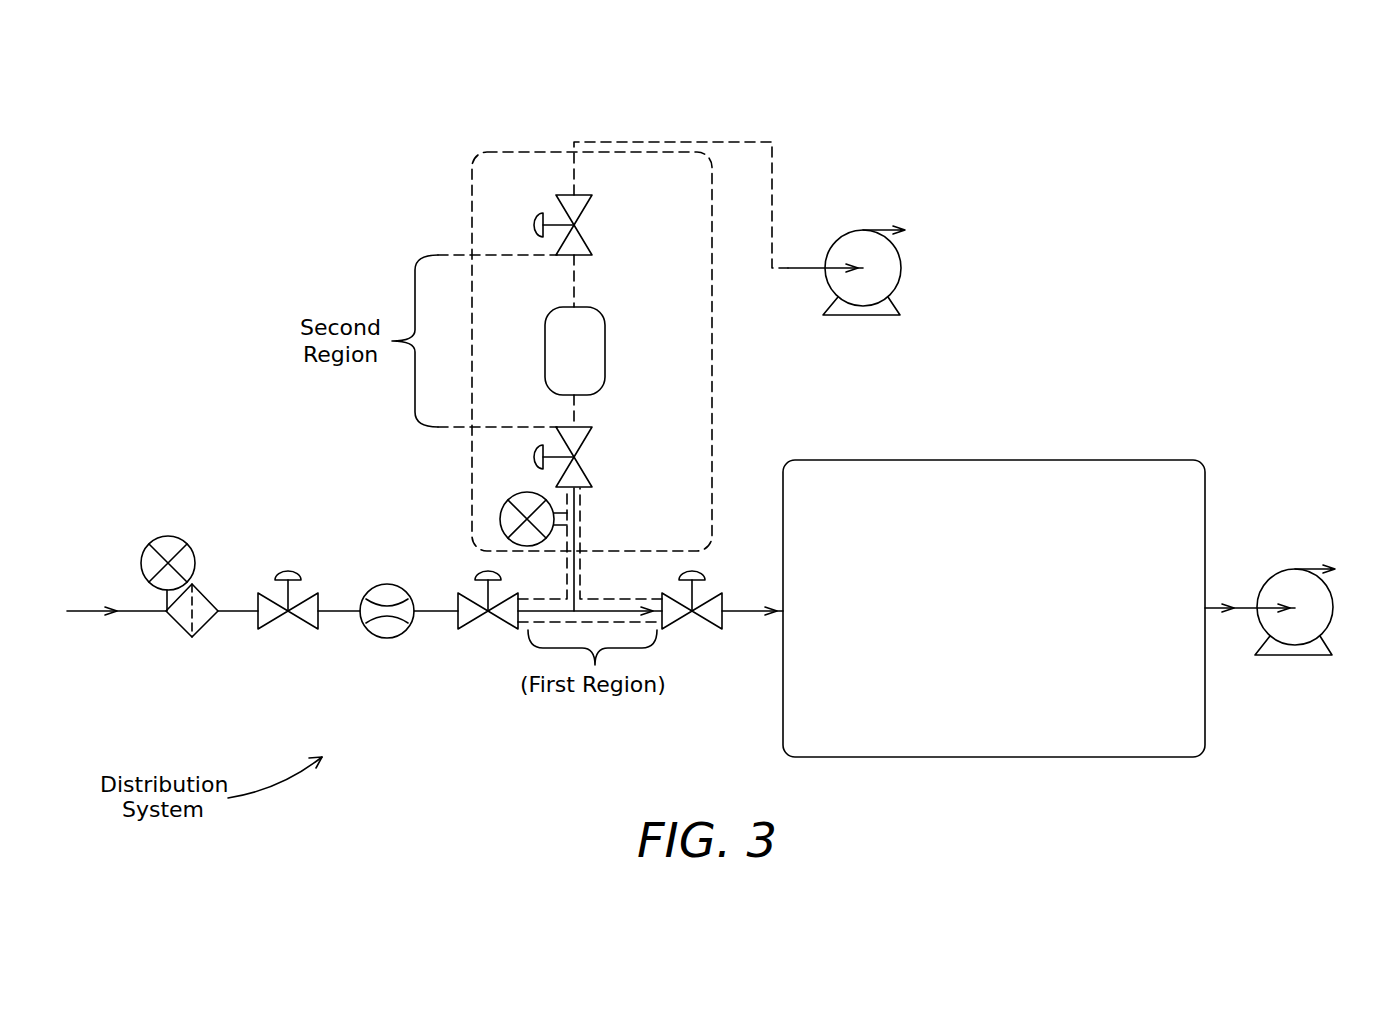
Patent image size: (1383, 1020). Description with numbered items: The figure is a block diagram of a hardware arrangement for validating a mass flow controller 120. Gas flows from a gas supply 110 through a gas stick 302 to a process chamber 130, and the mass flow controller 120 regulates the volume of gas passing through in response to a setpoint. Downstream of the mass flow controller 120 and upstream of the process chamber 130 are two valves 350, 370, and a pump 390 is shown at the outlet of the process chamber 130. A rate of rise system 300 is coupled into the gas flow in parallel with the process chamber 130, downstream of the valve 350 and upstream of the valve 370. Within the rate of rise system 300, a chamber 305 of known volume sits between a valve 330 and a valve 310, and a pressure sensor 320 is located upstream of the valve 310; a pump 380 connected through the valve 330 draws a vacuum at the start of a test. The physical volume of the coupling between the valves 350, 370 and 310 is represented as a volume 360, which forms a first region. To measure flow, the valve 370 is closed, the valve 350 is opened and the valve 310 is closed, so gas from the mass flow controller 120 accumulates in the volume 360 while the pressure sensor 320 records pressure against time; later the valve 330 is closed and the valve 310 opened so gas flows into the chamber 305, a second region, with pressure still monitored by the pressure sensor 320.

The gas supply 110 is at (148, 546).
The gas stick 302 is at (310, 628).
The mass flow controller 120 is at (372, 590).
The valve 350 is at (510, 628).
The valve 370 is at (672, 625).
The volume 360 is at (580, 533).
The rate of rise system 300 is at (471, 193).
The valve 330 is at (583, 237).
The chamber 305 is at (633, 332).
The valve 310 is at (583, 470).
The pressure sensor 320 is at (500, 518).
The pump 380 is at (890, 305).
The process chamber 130 is at (1208, 486).
The pump 390 is at (1270, 655).